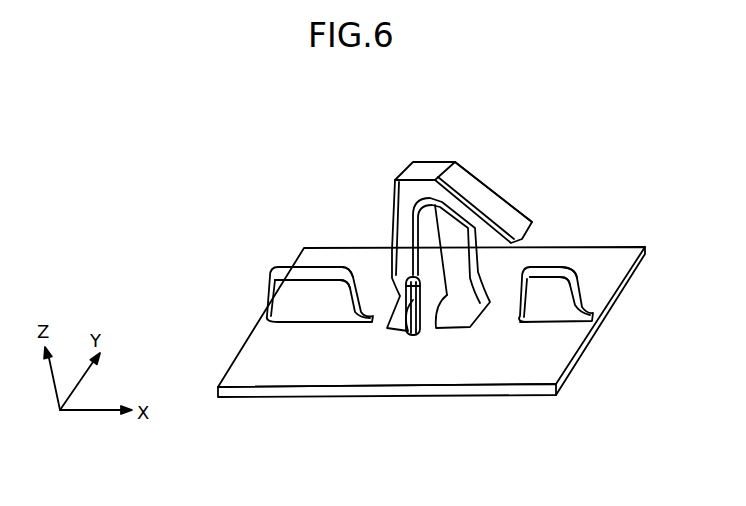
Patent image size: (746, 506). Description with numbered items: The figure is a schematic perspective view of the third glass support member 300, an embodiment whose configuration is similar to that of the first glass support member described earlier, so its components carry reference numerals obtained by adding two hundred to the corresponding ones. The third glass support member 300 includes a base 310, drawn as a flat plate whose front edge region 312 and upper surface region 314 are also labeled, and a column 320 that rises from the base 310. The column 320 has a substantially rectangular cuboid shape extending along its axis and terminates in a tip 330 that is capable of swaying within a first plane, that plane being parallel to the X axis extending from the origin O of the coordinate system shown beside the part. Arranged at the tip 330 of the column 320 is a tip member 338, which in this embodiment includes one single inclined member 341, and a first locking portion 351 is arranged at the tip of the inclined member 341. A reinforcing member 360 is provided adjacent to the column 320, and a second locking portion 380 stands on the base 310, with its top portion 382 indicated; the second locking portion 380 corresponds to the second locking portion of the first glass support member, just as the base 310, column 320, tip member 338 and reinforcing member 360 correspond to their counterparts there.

The third glass support member 300 is at (630, 109).
The base 310 is at (572, 372).
The front edge of base plate 312 is at (363, 408).
The top surface of base plate 314 is at (324, 365).
The column 320 is at (405, 240).
The tip 330 is at (443, 220).
The tip member 338 is at (485, 164).
The inclined member 341 is at (487, 202).
The first locking portion 351 is at (553, 258).
The reinforcing member 360 is at (419, 338).
The second locking portion 380 is at (300, 300).
The top plate of holding bracket 382 is at (288, 264).
The origin O is at (214, 408).